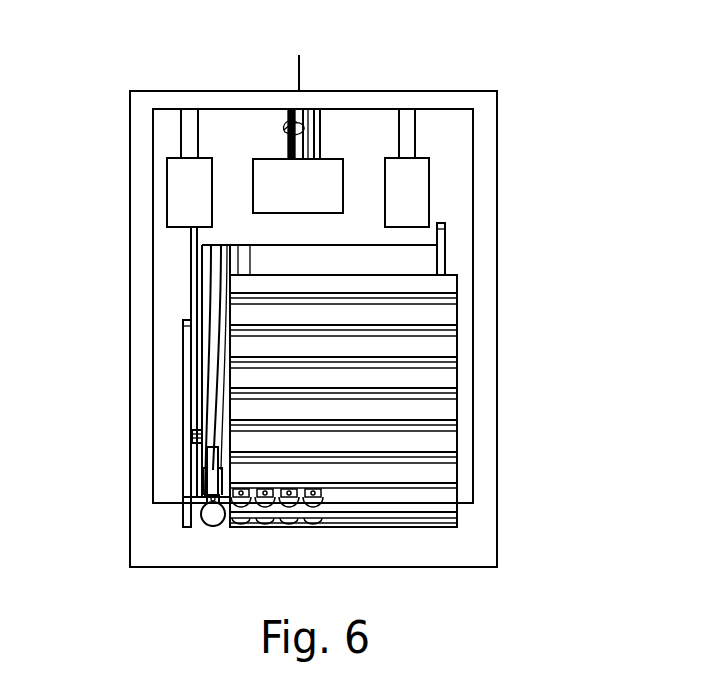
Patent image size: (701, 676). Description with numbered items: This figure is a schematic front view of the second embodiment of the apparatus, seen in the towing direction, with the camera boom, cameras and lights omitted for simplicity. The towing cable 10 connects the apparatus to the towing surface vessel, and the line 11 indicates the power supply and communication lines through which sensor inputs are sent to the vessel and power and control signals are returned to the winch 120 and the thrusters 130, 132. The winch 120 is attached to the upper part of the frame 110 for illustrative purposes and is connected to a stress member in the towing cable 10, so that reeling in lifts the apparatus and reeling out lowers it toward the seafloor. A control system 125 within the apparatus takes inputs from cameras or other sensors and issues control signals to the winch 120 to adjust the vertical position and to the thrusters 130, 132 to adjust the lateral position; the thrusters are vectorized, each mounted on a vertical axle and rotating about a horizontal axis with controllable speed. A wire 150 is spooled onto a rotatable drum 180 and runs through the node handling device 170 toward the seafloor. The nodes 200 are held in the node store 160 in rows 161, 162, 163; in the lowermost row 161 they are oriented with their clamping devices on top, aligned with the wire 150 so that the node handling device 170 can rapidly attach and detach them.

The towing cable 10 is at (300, 74).
The power supply and communication line 11 is at (284, 130).
The frame 110 is at (140, 249).
The winch 120 is at (322, 138).
The control system 125 is at (318, 199).
The thruster 130 is at (207, 172).
The thruster 132 is at (390, 173).
The wire 150 is at (236, 238).
The node store 160 is at (343, 401).
The lowermost row 161 is at (450, 506).
The row 162 is at (450, 472).
The row 163 is at (446, 439).
The node handling device 170 is at (199, 534).
The rotatable drum 180 is at (311, 254).
The node 200 is at (212, 525).